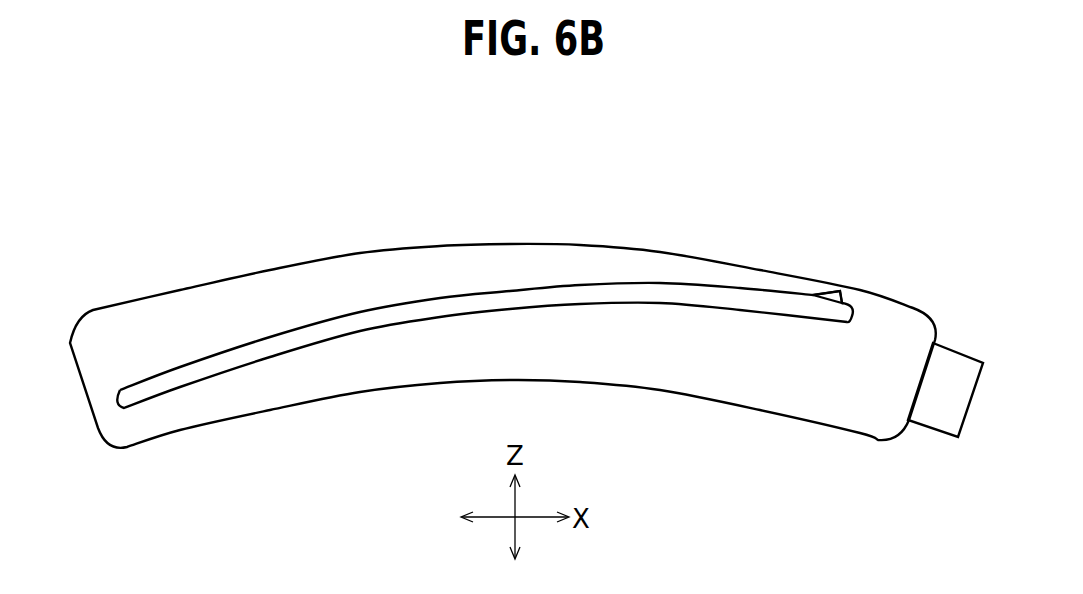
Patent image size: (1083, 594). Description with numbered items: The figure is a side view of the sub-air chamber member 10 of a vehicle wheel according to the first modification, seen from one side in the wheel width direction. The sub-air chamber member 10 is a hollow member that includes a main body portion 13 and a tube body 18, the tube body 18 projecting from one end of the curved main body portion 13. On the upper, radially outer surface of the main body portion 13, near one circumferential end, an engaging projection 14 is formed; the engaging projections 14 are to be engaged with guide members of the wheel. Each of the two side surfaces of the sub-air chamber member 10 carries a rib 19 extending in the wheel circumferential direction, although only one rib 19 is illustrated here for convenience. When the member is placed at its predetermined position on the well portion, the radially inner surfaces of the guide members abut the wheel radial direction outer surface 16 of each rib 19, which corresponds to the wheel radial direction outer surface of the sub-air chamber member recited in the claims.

The sub-air chamber member 10 is at (548, 227).
The main body portion 13 is at (503, 293).
The engaging projection 14 is at (837, 292).
The wheel radial direction outer surface 16 is at (437, 298).
The tube body 18 is at (950, 370).
The rib 19 is at (357, 327).